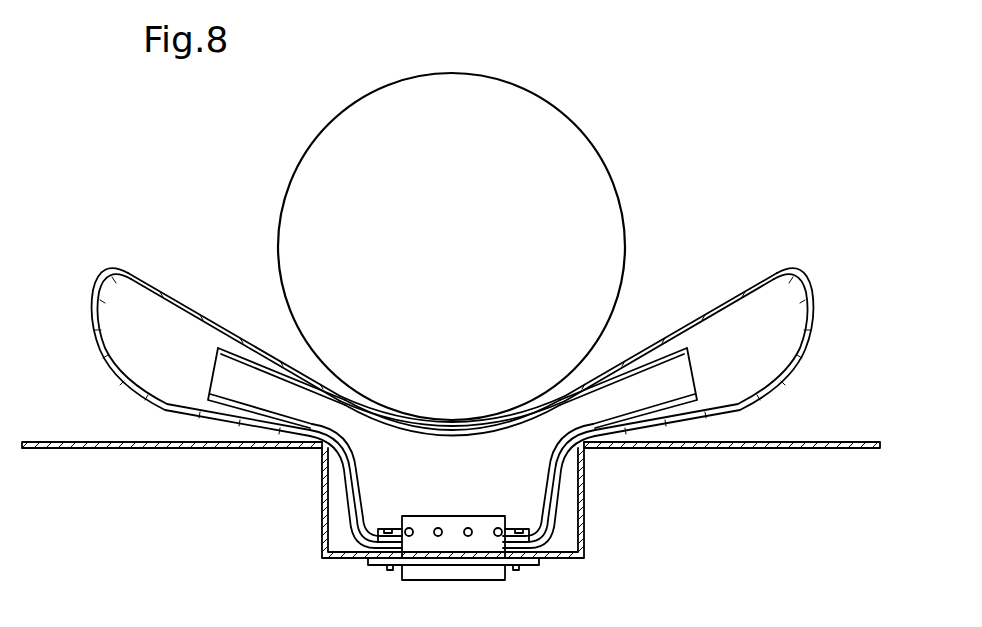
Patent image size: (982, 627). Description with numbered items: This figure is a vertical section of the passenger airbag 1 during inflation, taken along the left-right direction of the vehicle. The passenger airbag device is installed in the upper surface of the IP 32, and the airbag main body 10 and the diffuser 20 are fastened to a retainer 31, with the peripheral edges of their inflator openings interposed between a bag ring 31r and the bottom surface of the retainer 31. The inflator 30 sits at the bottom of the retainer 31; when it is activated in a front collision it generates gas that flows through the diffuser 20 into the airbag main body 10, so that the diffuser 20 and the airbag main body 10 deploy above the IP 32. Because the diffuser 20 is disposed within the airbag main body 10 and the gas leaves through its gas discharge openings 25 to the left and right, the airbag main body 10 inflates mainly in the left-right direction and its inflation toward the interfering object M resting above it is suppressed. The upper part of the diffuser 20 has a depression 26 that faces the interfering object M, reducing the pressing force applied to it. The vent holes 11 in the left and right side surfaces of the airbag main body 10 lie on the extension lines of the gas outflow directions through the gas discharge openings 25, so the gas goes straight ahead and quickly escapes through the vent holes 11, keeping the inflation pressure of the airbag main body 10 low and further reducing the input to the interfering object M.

The interfering object M is at (598, 191).
The passenger airbag 1 is at (761, 247).
The airbag main body 10 is at (673, 296).
The vent holes 11 is at (102, 355).
The diffuser 20 is at (365, 480).
The gas discharge openings 25 is at (220, 381).
The depression 26 is at (448, 436).
The inflator 30 is at (446, 572).
The retainer 31 is at (586, 507).
The bag ring 31r is at (530, 530).
The IP 32 is at (829, 442).